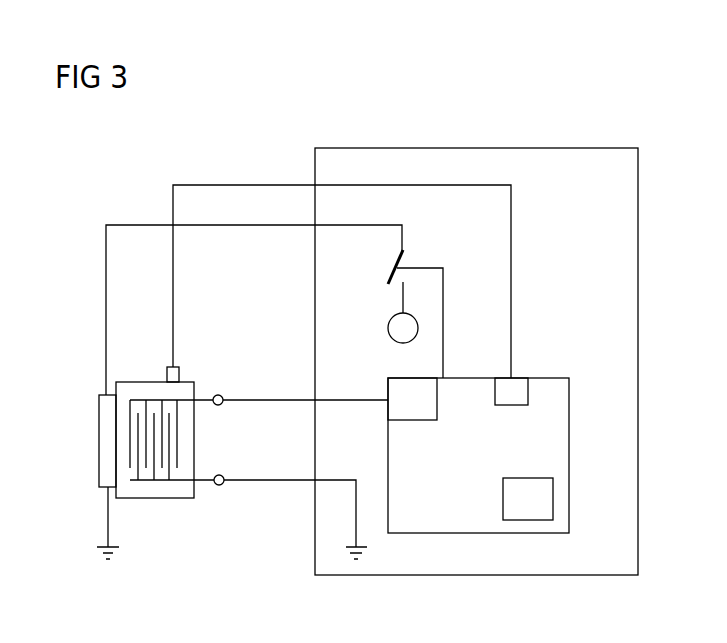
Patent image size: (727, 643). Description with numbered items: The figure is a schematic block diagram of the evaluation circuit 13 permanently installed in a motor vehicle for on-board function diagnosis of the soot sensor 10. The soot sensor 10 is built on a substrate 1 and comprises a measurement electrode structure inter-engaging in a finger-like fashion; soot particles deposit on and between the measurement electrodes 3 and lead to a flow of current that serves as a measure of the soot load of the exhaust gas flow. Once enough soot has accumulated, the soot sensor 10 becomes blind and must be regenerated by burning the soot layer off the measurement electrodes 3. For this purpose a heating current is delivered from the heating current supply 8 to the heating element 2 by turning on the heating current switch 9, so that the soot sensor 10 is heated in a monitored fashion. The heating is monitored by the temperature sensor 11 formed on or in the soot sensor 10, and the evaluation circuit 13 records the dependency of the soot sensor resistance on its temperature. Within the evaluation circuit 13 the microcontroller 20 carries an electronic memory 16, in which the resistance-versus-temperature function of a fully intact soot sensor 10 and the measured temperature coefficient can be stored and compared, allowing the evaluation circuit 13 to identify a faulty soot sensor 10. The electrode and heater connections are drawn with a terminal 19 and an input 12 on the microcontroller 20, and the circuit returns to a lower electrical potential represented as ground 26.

The substrate 1 is at (185, 442).
The heating element 2 is at (107, 440).
The measurement electrodes 3 is at (143, 483).
The heating current supply 8 is at (388, 330).
The heating current switch 9 is at (390, 270).
The soot sensor 10 is at (190, 342).
The temperature sensor 11 is at (180, 373).
The input 12 is at (512, 398).
The evaluation circuit 13 is at (355, 128).
The electronic memory 16 is at (503, 497).
The measuring unit 19 is at (412, 410).
The microcontroller 20 is at (569, 455).
The ground 26 is at (97, 553).